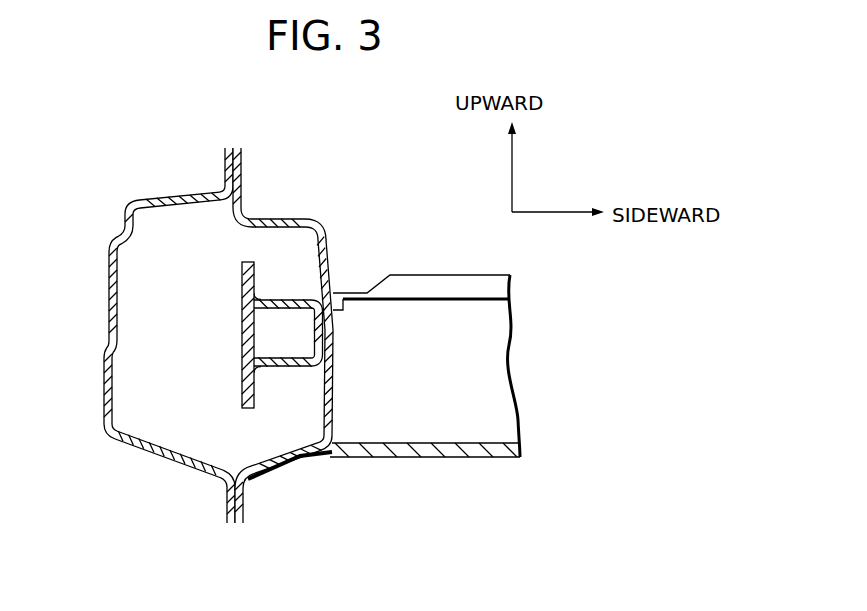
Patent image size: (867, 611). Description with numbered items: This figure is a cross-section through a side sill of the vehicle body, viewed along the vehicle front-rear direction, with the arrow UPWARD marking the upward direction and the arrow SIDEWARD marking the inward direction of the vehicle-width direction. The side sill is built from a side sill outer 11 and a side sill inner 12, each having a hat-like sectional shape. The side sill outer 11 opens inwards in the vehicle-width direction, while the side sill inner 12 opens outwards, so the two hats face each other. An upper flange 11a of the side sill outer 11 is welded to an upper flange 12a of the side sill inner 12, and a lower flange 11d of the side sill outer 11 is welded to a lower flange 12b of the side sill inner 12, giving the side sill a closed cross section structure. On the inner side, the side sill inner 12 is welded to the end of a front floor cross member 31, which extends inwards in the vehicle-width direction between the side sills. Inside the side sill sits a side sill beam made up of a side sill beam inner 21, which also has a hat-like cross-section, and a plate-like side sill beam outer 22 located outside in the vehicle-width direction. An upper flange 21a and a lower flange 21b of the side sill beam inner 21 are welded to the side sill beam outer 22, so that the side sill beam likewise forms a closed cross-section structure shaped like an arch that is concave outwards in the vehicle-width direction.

The side sill outer 11 is at (131, 206).
The upper flange of side sill outer 11a is at (226, 154).
The lower flange of side sill outer 11d is at (227, 505).
The side sill inner 12 is at (320, 224).
The upper flange of side sill inner 12a is at (242, 160).
The lower flange of side sill inner 12b is at (244, 517).
The side sill beam inner 21 is at (289, 302).
The upper flange of side sill beam inner 21a is at (258, 268).
The lower flange of side sill beam inner 21b is at (260, 395).
The side sill beam outer 22 is at (242, 311).
The front floor cross member 31 is at (467, 362).